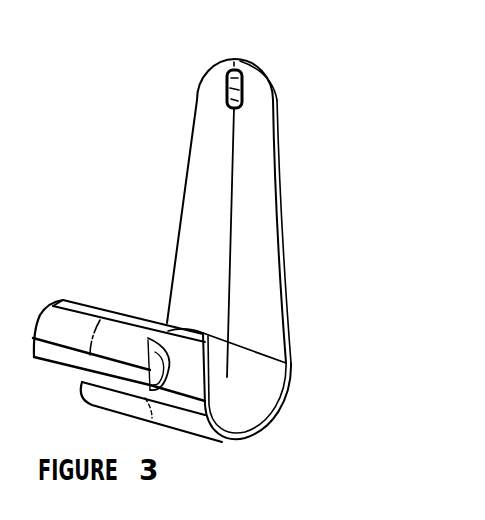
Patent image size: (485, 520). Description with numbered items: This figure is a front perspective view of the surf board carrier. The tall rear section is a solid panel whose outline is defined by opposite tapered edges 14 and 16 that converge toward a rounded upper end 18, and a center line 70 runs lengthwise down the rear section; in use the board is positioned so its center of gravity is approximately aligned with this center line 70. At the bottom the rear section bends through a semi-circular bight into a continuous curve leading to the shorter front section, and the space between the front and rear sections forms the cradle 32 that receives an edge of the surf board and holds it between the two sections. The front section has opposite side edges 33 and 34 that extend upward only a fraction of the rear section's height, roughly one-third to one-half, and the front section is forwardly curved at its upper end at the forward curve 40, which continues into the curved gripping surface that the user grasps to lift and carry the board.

The tapered edge 14 is at (183, 202).
The tapered edge 16 is at (280, 207).
The upper end 18 is at (238, 60).
The center line 70 is at (230, 188).
The cradle 32 is at (254, 395).
The forward curve 40 is at (105, 301).
The side edge 33 is at (82, 382).
The side edge 34 is at (186, 428).